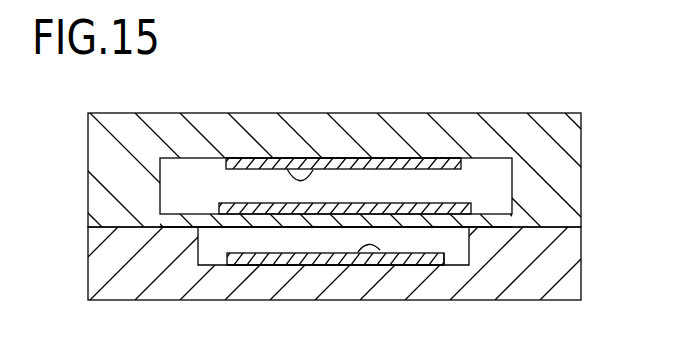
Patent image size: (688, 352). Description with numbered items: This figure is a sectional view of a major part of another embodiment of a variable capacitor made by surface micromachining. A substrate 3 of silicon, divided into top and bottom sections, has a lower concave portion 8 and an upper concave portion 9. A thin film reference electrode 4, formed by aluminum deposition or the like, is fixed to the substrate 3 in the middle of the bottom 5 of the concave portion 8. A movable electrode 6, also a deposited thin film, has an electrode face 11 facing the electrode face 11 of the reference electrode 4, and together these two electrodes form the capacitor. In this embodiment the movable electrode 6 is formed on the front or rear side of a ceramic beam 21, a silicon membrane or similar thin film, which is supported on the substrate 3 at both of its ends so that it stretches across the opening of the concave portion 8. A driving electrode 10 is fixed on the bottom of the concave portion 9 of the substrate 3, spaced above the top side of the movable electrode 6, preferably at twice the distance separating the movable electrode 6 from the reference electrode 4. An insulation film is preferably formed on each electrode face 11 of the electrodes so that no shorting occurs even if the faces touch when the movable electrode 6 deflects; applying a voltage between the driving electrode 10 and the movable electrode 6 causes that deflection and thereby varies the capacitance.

The substrate 3 is at (561, 199).
The reference electrode 4 is at (330, 266).
The bottom 5 is at (449, 268).
The movable electrode 6 is at (255, 203).
The concave portion 8 is at (205, 245).
The concave portion 9 is at (493, 183).
The driving electrode 10 is at (400, 158).
The electrode face 11 is at (318, 158).
The ceramic beam 21 is at (466, 232).